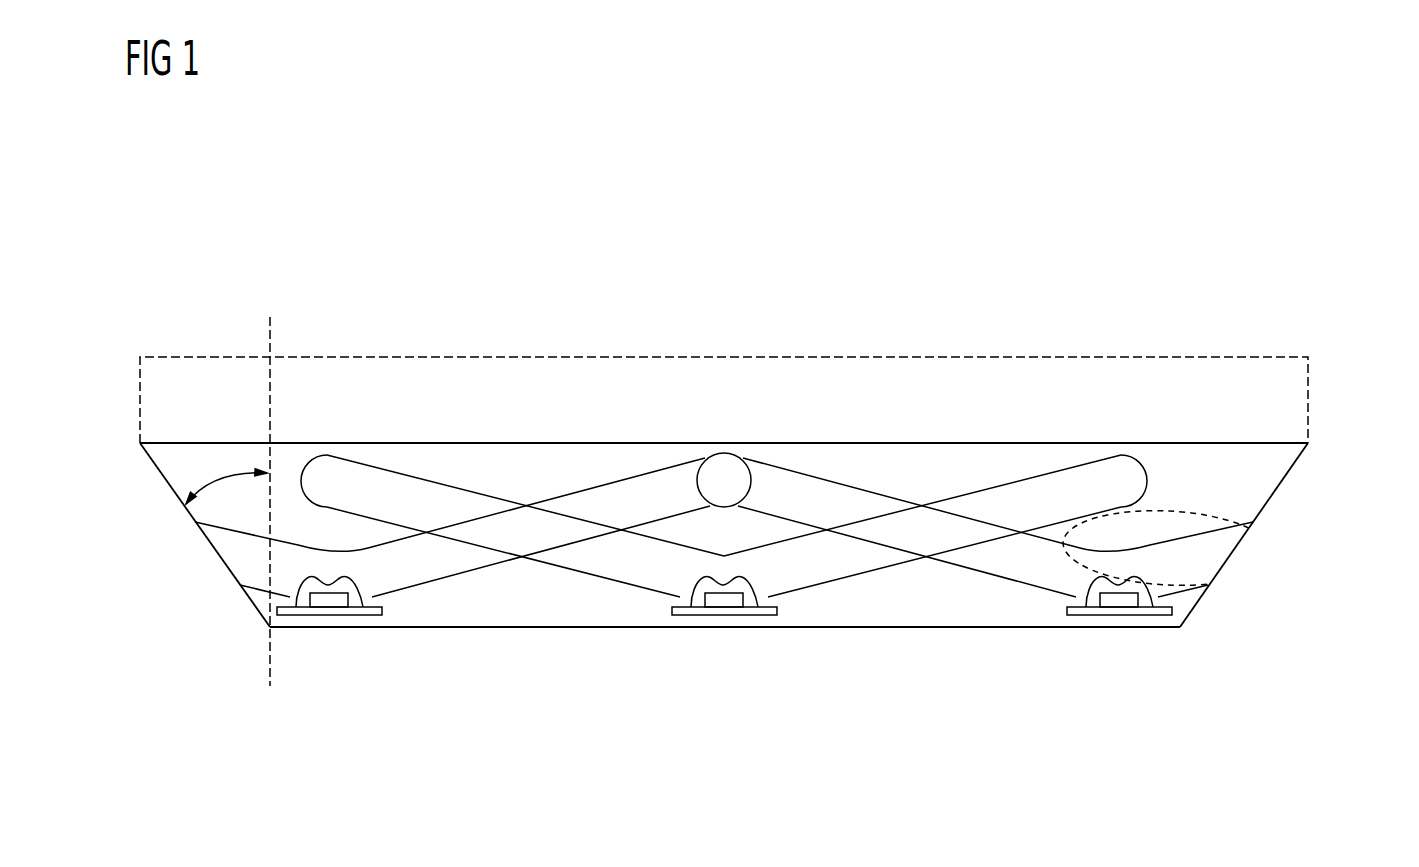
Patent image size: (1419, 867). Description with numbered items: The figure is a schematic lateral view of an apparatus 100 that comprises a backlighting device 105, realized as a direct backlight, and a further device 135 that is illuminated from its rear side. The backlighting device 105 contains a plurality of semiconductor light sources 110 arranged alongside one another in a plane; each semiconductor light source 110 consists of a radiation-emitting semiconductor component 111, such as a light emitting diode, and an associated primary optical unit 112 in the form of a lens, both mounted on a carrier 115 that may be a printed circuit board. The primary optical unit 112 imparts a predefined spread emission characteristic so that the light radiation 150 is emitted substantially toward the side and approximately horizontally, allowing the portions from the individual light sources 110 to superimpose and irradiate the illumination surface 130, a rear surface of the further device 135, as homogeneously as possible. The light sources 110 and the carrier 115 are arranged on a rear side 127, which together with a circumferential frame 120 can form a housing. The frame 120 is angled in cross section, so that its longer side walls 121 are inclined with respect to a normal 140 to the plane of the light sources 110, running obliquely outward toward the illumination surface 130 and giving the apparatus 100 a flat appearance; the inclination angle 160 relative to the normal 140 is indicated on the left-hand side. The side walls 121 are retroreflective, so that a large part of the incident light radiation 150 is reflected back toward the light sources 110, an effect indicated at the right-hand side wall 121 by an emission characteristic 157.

The apparatus 100 is at (383, 212).
The backlighting device 105 is at (427, 688).
The semiconductor light source 110 is at (723, 691).
The radiation-emitting semiconductor component 111 is at (715, 598).
The primary optical unit 112 is at (690, 597).
The carrier 115 is at (757, 612).
The frame 120 is at (1262, 505).
The side wall 121 is at (186, 514).
The rear side 127 is at (572, 628).
The illumination surface 130 is at (566, 440).
The further device 135 is at (472, 373).
The normal 140 is at (268, 326).
The light radiation 150 is at (797, 575).
The emission characteristic 157 is at (1183, 512).
The inclination angle 160 is at (220, 491).